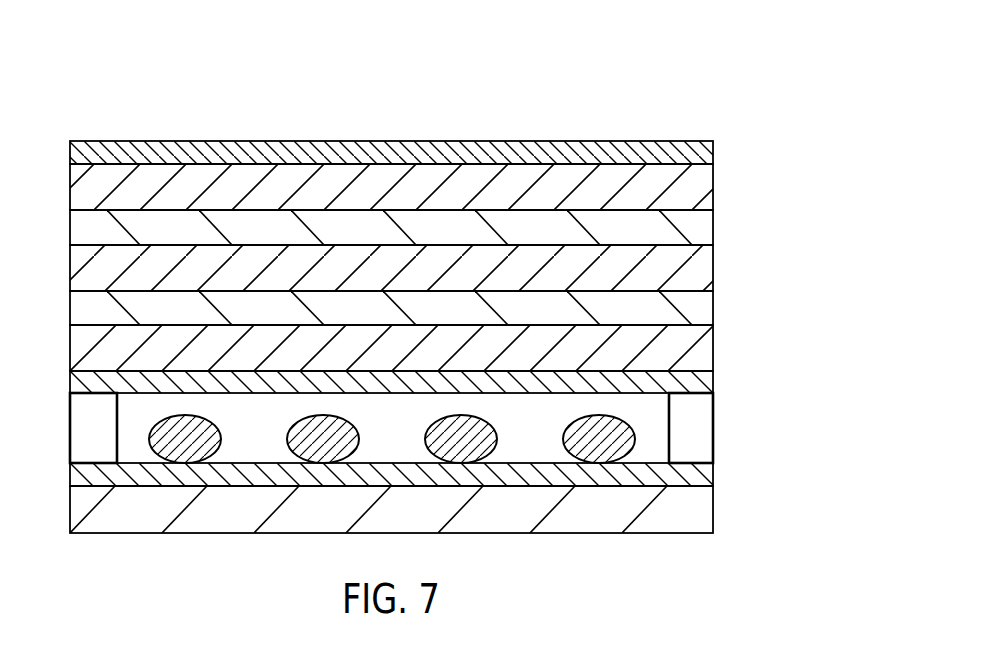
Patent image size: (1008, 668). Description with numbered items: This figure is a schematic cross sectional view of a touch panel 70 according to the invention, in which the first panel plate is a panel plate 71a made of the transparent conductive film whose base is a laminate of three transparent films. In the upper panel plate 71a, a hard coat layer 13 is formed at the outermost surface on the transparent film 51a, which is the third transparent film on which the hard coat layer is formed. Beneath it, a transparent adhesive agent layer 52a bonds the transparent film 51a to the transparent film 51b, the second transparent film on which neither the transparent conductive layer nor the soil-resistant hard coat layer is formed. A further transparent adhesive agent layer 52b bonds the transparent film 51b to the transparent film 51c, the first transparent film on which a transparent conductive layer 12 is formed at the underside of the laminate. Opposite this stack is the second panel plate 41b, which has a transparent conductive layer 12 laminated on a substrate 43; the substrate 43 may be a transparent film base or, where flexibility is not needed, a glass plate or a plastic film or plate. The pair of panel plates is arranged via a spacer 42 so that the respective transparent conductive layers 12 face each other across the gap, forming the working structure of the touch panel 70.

The touch panel 70 is at (662, 98).
The hard coat layer 13 is at (714, 152).
The transparent film 51a is at (698, 193).
The transparent adhesive agent layer 52a is at (700, 232).
The transparent film 51b is at (700, 273).
The transparent adhesive agent layer 52b is at (700, 312).
The transparent film 51c is at (700, 352).
The transparent conductive layer 12 is at (700, 392).
The spacer 42 is at (605, 442).
The substrate 43 is at (700, 520).
The panel plate 71a is at (795, 144).
The second panel plate 41b is at (795, 457).